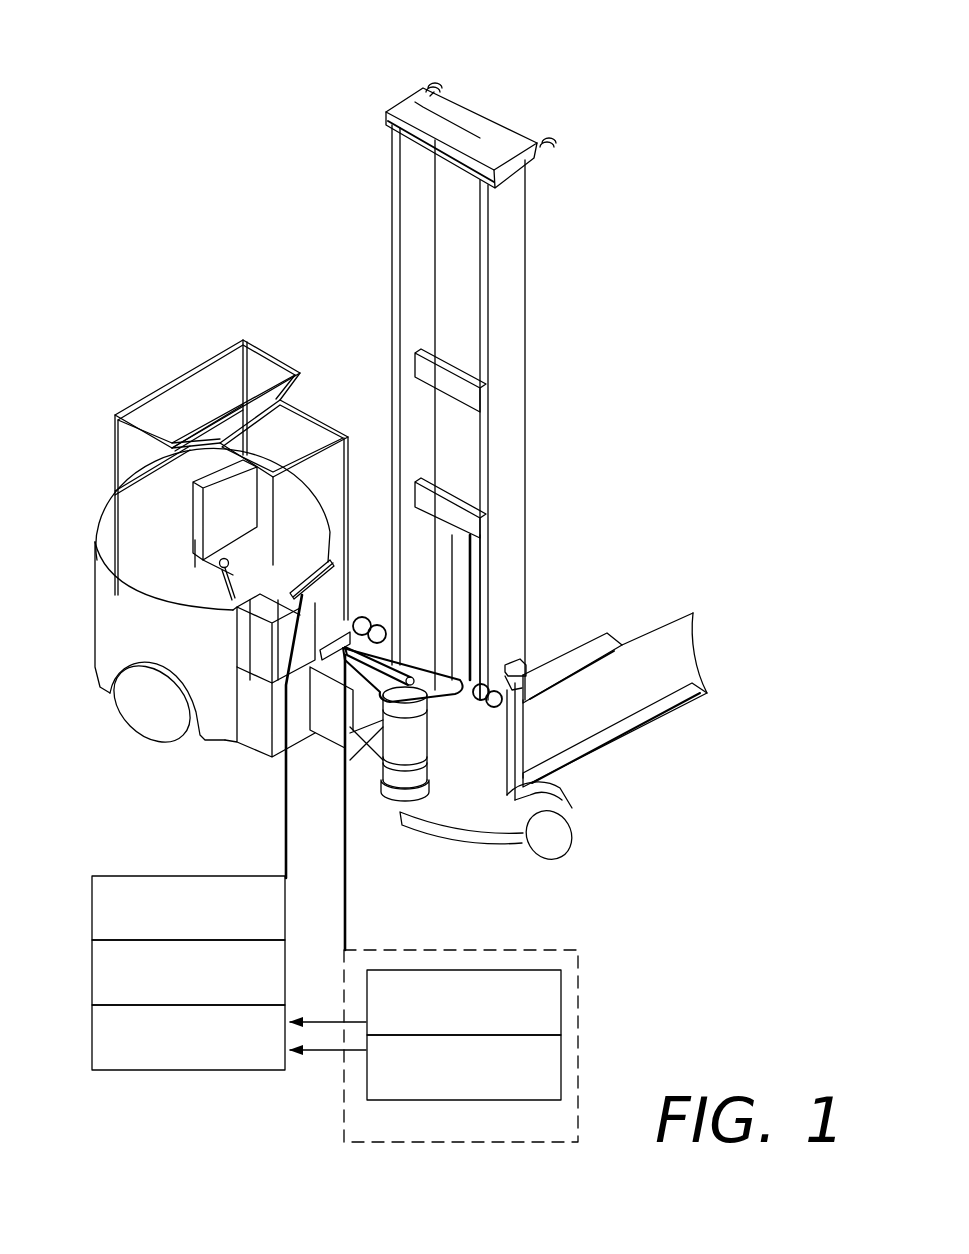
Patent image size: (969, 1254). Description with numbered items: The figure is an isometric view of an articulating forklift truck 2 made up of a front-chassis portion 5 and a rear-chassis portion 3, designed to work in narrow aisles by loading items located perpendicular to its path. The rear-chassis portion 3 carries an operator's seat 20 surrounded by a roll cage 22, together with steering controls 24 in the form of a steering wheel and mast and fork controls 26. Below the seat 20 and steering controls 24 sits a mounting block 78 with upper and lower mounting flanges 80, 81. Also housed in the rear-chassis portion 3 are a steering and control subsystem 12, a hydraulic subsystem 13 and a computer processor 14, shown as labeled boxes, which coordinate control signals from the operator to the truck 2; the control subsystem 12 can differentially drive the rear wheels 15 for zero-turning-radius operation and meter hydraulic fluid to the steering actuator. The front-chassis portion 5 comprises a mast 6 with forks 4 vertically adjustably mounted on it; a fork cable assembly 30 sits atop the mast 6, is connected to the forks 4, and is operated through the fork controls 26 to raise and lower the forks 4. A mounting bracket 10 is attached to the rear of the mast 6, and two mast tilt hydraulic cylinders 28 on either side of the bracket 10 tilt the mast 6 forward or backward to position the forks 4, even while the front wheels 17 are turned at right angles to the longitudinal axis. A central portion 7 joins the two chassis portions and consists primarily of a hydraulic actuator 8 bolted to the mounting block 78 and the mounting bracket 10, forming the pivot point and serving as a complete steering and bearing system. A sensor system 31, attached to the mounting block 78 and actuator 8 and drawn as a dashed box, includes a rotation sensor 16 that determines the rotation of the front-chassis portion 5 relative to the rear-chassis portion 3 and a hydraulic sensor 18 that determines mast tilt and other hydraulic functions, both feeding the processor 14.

The articulating forklift truck 2 is at (100, 62).
The rear-chassis portion 3 is at (96, 432).
The forks 4 is at (620, 645).
The front-chassis portion 5 is at (572, 336).
The mast 6 is at (415, 254).
The central portion 7 is at (258, 822).
The hydraulic actuator 8 is at (352, 753).
The mounting bracket 10 is at (468, 750).
The steering and control subsystem 12 is at (188, 908).
The hydraulic subsystem 13 is at (188, 974).
The computer processor 14 is at (229, 1039).
The rear wheels 15 is at (143, 703).
The rotation sensor 16 is at (464, 1003).
The front wheels 17 is at (552, 842).
The hydraulic sensor 18 is at (464, 1068).
The operator's seat 20 is at (247, 563).
The roll cage 22 is at (190, 372).
The steering controls 24 is at (327, 563).
The mast and fork controls 26 is at (218, 594).
The mast tilt hydraulic cylinders 28 is at (513, 683).
The fork cable assembly 30 is at (455, 128).
The sensor system 31 is at (461, 1046).
The mounting block 78 is at (330, 703).
The upper mounting flange 80 is at (345, 697).
The lower mounting flange 81 is at (345, 752).